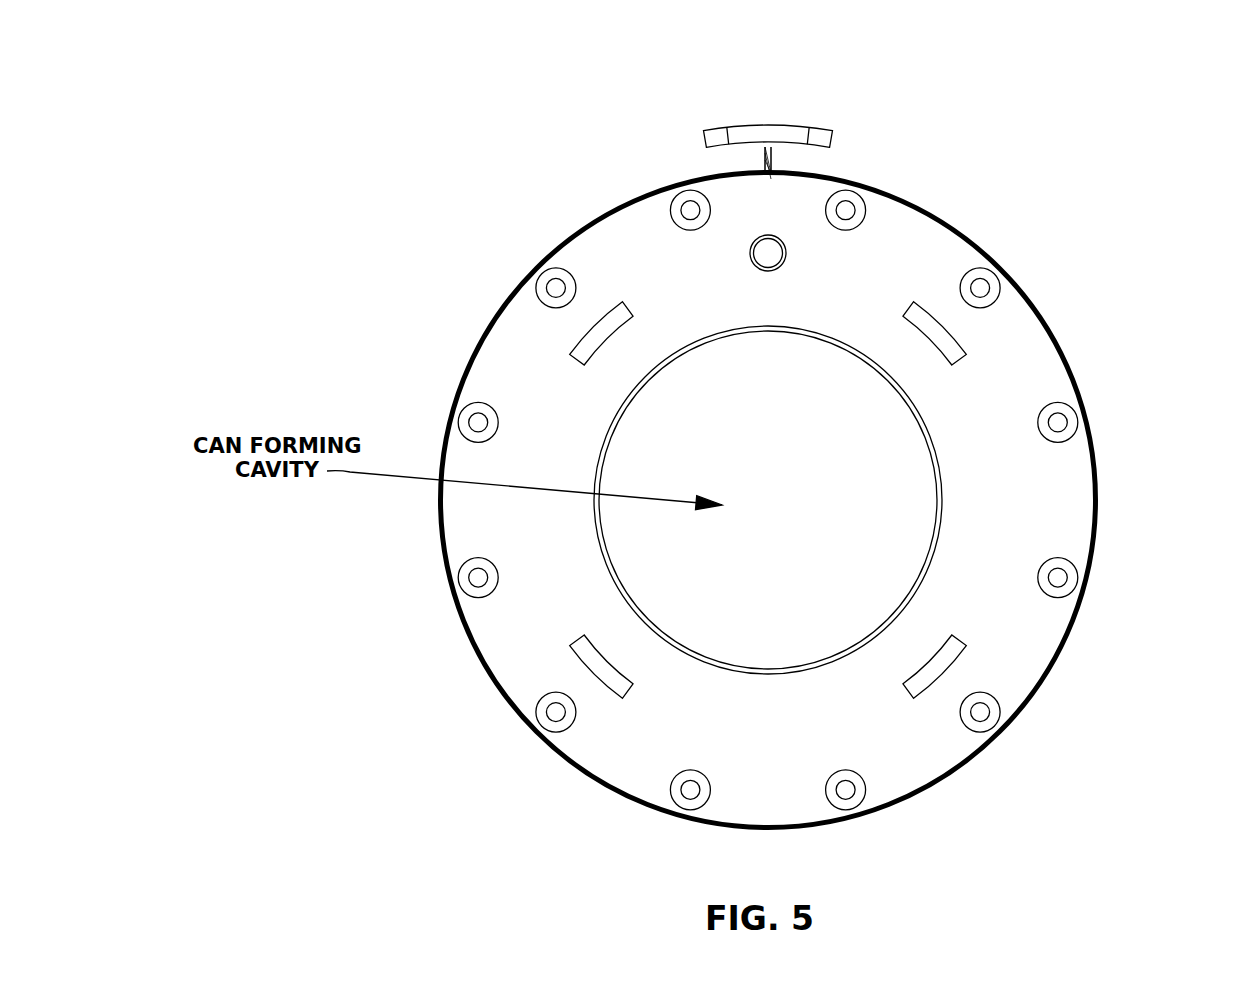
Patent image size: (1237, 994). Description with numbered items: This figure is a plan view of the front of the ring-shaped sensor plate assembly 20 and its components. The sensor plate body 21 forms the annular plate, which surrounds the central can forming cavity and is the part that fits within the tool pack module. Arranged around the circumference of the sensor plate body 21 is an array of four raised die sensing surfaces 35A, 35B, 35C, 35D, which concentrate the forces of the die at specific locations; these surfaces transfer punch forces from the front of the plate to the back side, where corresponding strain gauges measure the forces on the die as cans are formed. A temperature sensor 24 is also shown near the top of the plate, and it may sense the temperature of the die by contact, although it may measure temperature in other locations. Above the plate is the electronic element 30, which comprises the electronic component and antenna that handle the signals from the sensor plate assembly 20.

The sensor plate assembly 20 is at (881, 267).
The sensor plate body 21 is at (948, 255).
The temperature sensor 24 is at (752, 250).
The electronic element 30 is at (798, 113).
The raised die sensing surface 35A is at (963, 340).
The raised die sensing surface 35B is at (965, 667).
The raised die sensing surface 35C is at (575, 662).
The raised die sensing surface 35D is at (577, 335).